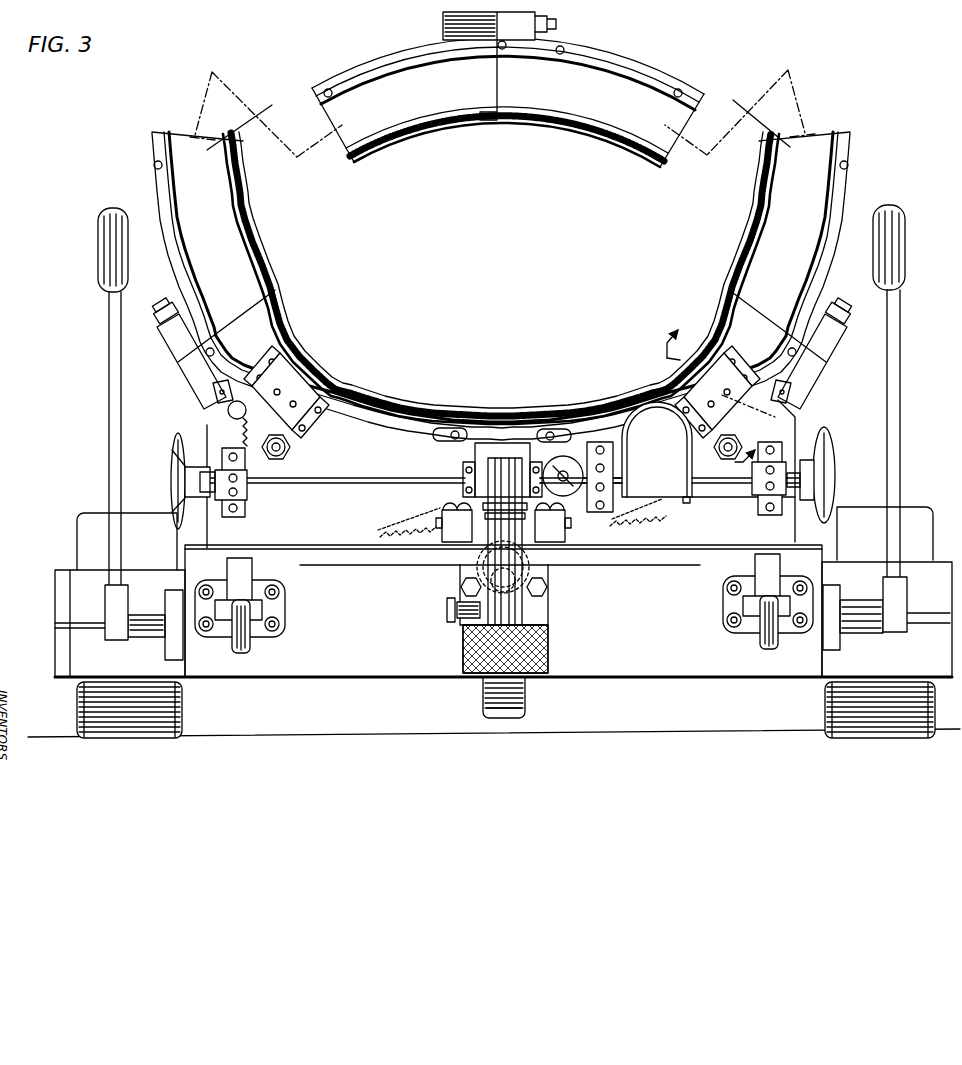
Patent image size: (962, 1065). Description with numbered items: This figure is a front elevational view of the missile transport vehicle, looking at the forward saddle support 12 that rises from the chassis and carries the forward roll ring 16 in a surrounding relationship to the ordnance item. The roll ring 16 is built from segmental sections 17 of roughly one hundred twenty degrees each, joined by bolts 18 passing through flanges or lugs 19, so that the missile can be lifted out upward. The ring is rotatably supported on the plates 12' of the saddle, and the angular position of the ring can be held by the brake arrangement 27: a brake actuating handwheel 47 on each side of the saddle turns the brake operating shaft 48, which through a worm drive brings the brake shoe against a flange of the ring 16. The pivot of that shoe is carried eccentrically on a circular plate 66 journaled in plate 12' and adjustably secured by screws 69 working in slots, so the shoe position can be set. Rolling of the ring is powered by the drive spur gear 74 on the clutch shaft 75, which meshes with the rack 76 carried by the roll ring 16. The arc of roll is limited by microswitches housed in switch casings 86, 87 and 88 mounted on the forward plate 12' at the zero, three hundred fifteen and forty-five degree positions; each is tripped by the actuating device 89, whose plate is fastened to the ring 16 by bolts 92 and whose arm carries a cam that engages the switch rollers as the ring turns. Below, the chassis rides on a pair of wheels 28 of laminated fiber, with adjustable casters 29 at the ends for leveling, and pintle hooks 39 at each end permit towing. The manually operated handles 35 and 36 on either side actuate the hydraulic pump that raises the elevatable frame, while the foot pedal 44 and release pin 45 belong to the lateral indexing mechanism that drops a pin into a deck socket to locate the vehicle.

The forward saddle support 12 is at (722, 383).
The plates of saddle 12' is at (520, 498).
The roll ring 16 is at (405, 417).
The segmental sections 17 is at (353, 120).
The bolts 18 is at (557, 22).
The flanges or lugs 19 is at (447, 35).
The brake arrangement 27 is at (663, 500).
The wheels 28 is at (95, 703).
The adjustable casters 29 is at (526, 708).
The manually operated handle 35 is at (902, 362).
The manually operated handle 36 is at (107, 360).
The pintle hooks 39 is at (251, 647).
The foot pedal 44 is at (540, 640).
The release pin 45 is at (447, 611).
The brake actuating handwheel 47 is at (176, 446).
The brake operating shaft 48 is at (740, 486).
The circular plate 66 is at (576, 497).
The screws 69 is at (565, 460).
The drive spur gear 74 is at (476, 567).
The clutch shaft 75 is at (472, 581).
The rack 76 is at (380, 528).
The switch casing 86 is at (520, 455).
The switch casing 87 is at (303, 385).
The switch casing 88 is at (730, 380).
The actuating device 89 is at (482, 430).
The bolts 92 is at (455, 431).